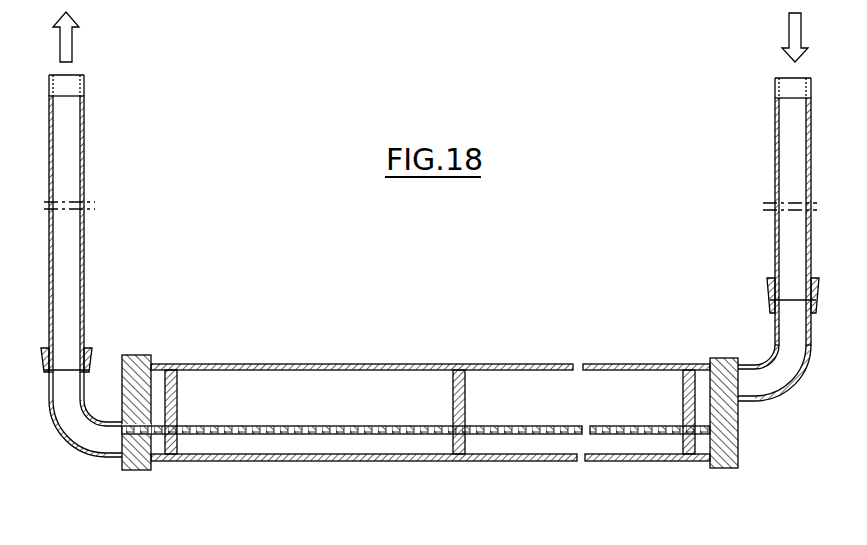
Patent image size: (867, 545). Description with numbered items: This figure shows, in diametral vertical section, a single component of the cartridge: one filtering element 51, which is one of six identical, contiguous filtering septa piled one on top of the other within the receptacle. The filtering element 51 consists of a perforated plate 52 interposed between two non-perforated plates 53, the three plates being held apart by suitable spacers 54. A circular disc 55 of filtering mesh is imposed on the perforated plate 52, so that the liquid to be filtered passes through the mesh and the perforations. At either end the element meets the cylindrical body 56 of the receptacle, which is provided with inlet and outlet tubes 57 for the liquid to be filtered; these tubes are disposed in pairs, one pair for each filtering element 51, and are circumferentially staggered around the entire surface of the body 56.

The filtering element 51 is at (416, 403).
The perforated plate 52 is at (416, 405).
The non-perforated plates 53 is at (537, 363).
The spacers 54 is at (177, 390).
The circular disc of filtering mesh 55 is at (631, 427).
The cylindrical body 56 is at (122, 378).
The inlet and outlet tubes 57 is at (82, 175).